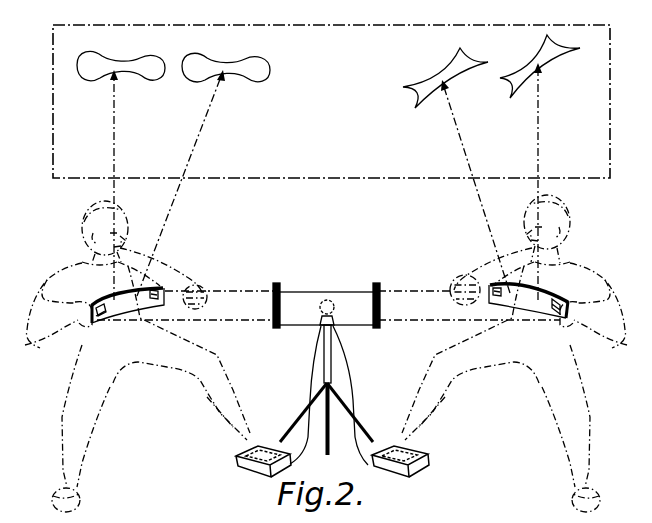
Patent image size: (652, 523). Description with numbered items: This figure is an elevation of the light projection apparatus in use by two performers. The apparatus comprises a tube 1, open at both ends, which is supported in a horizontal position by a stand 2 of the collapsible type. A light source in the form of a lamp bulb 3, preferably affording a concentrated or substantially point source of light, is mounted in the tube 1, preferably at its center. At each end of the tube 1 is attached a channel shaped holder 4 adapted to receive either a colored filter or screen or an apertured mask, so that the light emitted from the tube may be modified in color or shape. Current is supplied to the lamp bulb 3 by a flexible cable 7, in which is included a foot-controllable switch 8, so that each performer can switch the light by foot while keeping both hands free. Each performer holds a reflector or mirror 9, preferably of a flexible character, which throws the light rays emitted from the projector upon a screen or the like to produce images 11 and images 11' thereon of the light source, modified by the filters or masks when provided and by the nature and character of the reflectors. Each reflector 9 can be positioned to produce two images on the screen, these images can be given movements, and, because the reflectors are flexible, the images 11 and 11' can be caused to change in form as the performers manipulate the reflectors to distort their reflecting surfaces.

The tube 1 is at (318, 297).
The stand 2 is at (333, 357).
The lamp bulb 3 is at (333, 301).
The channel shaped holder 4 is at (272, 316).
The flexible cable 7 is at (311, 357).
The foot-controllable switch 8 is at (255, 470).
The reflector or mirror 9 is at (121, 310).
The images 11 is at (173, 57).
The images 11' is at (491, 71).